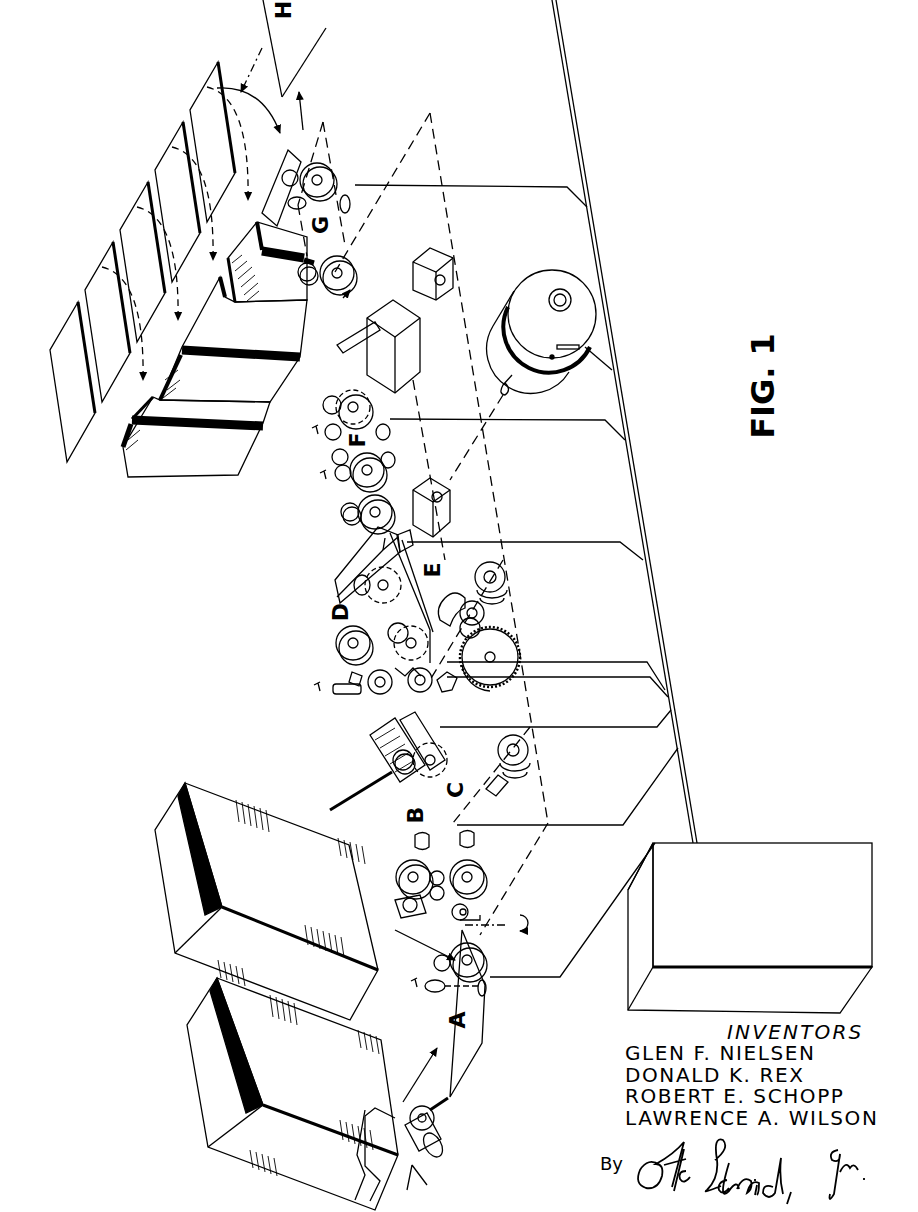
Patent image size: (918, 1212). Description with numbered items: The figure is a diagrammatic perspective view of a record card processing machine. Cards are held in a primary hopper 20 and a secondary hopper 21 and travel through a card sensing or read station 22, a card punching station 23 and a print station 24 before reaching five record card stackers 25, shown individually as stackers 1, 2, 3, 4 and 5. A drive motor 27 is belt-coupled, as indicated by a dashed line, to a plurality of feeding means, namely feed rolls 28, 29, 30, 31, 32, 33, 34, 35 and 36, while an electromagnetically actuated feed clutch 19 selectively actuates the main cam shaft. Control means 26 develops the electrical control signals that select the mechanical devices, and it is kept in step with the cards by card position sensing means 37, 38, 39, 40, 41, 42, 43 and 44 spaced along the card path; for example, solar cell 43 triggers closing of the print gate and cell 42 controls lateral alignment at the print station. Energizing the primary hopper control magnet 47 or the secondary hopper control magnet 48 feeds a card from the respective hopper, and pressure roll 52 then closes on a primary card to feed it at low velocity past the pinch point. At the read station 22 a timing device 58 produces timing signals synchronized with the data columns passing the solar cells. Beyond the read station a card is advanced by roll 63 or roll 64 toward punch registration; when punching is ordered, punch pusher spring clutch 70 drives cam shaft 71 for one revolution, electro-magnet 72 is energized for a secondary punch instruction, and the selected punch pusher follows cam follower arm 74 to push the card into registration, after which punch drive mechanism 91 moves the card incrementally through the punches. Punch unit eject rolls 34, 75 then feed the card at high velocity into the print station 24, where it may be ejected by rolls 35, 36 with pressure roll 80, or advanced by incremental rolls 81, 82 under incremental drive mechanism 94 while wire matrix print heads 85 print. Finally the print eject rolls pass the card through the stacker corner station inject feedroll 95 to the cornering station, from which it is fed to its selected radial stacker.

The sheet 1 is at (212, 142).
The sheet 2 is at (177, 202).
The sheet 3 is at (142, 262).
The sheet 4 is at (107, 322).
The sheet 5 is at (72, 382).
The feed clutch 19 is at (528, 752).
The primary card hopper 20 is at (203, 1073).
The secondary card hopper 21 is at (167, 877).
The card sensing station 22 is at (362, 742).
The card punching station 23 is at (330, 572).
The print station 24 is at (393, 295).
The record card stackers 25 is at (281, 190).
The control means 26 is at (755, 843).
The drive motor 27 is at (544, 271).
The feed roll 28 is at (485, 958).
The feed roll 29 is at (450, 915).
The feed roll 30 is at (484, 877).
The feed roll 31 is at (450, 762).
The constantly running roll 32 is at (336, 643).
The constantly running roll 33 is at (421, 626).
The punch unit eject roll 34 is at (392, 505).
The eject roll 35 is at (395, 465).
The eject roll 36 is at (350, 268).
The card position sensing means 37 is at (490, 996).
The card position sensing means 38 is at (408, 840).
The card position sensing means 39 is at (480, 840).
The card position sensing means 40 is at (352, 676).
The card position sensing means 41 is at (453, 683).
The card position sensing cell 42 is at (320, 462).
The solar cell 43 is at (320, 424).
The card position sensing means 44 is at (355, 206).
The primary hopper control magnet 47 is at (432, 1160).
The secondary hopper control magnet 48 is at (413, 908).
The pressure roll 52 is at (477, 892).
The timing device 58 is at (512, 653).
The feed roll 63 is at (370, 696).
The feed roll 64 is at (398, 700).
The punch pusher spring clutch 70 is at (507, 573).
The cam shaft 71 is at (472, 605).
The electro-magnet 72 is at (332, 692).
The cam follower arm 74 is at (445, 590).
The punch unit eject roll 75 is at (341, 511).
The pressure roll 80 is at (299, 274).
The incremental feed roll 81 is at (371, 400).
The pressure roll 82 is at (326, 400).
The wire matrix print heads 85 is at (362, 338).
The punch drive mechanism 91 is at (450, 504).
The incremental drive mechanism 94 is at (450, 265).
The stacker corner station inject feedroll 95 is at (335, 178).